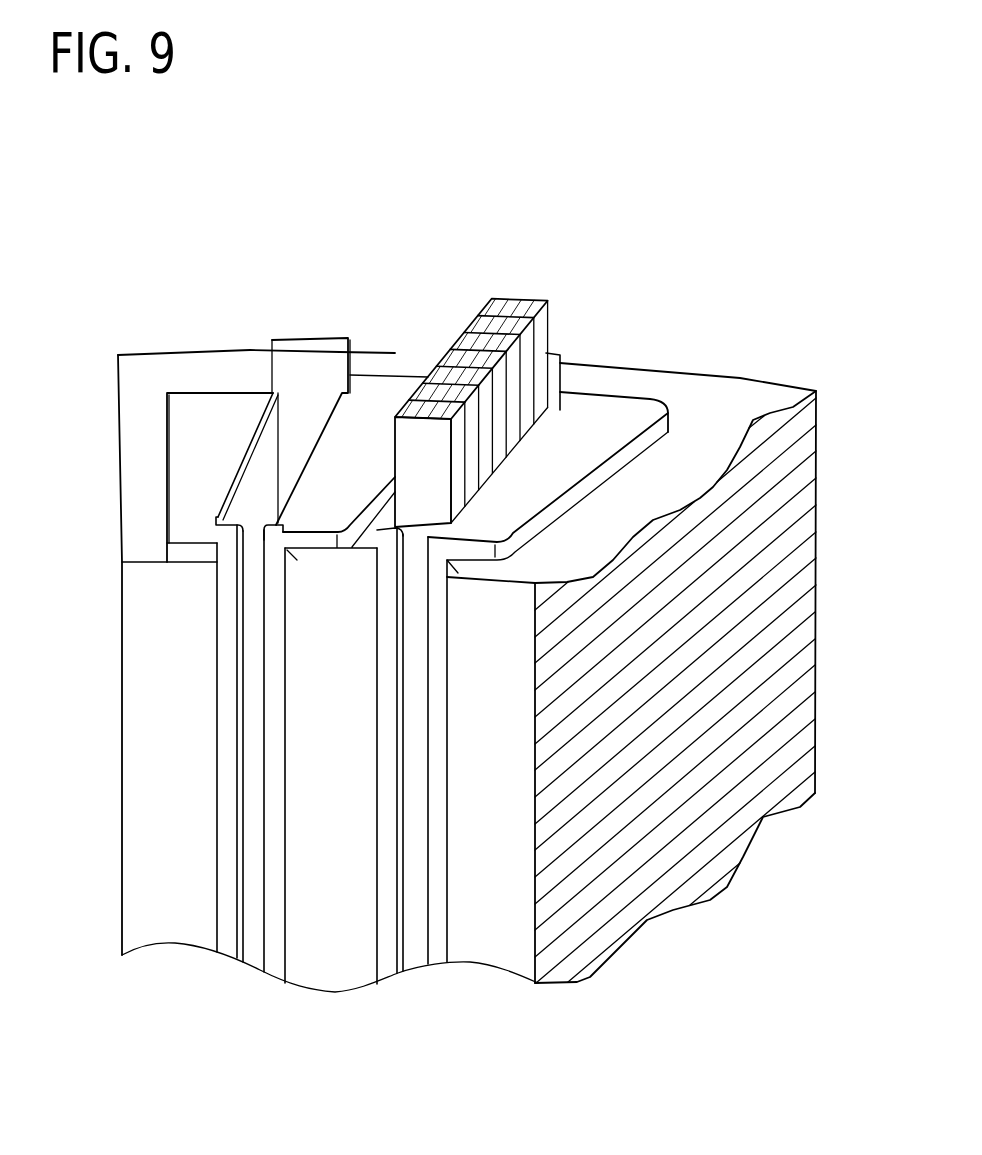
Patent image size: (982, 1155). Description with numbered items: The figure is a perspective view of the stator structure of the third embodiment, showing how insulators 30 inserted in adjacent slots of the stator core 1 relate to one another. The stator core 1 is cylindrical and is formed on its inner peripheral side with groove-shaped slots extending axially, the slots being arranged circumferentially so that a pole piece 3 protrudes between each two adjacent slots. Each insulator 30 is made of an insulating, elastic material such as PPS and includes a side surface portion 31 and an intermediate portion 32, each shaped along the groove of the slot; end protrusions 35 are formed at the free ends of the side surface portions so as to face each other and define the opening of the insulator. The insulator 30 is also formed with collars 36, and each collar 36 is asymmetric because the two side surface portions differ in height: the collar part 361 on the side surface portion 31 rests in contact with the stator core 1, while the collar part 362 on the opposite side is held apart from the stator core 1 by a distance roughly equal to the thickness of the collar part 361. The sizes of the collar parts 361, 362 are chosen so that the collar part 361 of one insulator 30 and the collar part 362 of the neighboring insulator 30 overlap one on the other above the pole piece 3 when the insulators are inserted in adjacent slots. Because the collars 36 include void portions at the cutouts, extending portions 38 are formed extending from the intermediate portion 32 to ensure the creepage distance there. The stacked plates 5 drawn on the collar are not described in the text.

The stator core 1 is at (602, 374).
The pole piece 3 is at (325, 962).
The stacked terminal plates 5 is at (483, 313).
The insulator 30 is at (235, 381).
The side surface portion 31 is at (252, 497).
The intermediate portion 32 is at (303, 420).
The end protrusion 35 is at (430, 527).
The collar 36 is at (385, 377).
The extending portion 38 is at (312, 368).
The collar part 361 is at (190, 513).
The collar part 362 is at (603, 435).